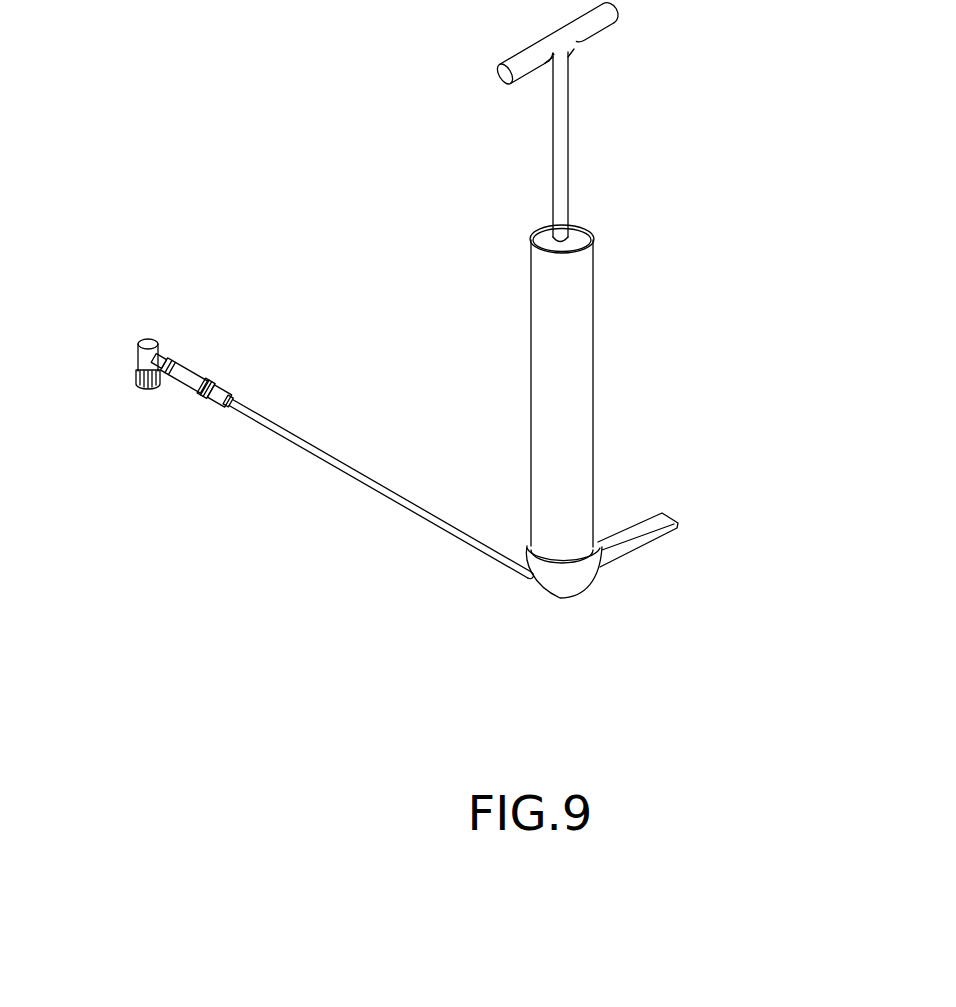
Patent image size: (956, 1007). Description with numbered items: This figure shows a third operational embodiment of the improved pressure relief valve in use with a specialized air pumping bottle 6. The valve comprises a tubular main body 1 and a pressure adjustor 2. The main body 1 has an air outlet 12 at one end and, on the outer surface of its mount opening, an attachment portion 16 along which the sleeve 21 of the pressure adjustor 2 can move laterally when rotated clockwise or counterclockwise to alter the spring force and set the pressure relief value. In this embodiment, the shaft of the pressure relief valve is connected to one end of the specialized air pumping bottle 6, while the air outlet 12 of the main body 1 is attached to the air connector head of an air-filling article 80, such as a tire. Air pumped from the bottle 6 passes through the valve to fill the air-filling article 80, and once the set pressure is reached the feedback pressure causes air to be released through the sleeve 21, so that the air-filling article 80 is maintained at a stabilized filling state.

The specialized air pumping bottle 6 is at (530, 340).
The air-filling article 80 is at (140, 354).
The tubular main body 1 is at (190, 356).
The air outlet 12 is at (168, 374).
The attachment portion 16 is at (203, 395).
The pressure adjustor 2 is at (219, 379).
The sleeve 21 is at (228, 386).